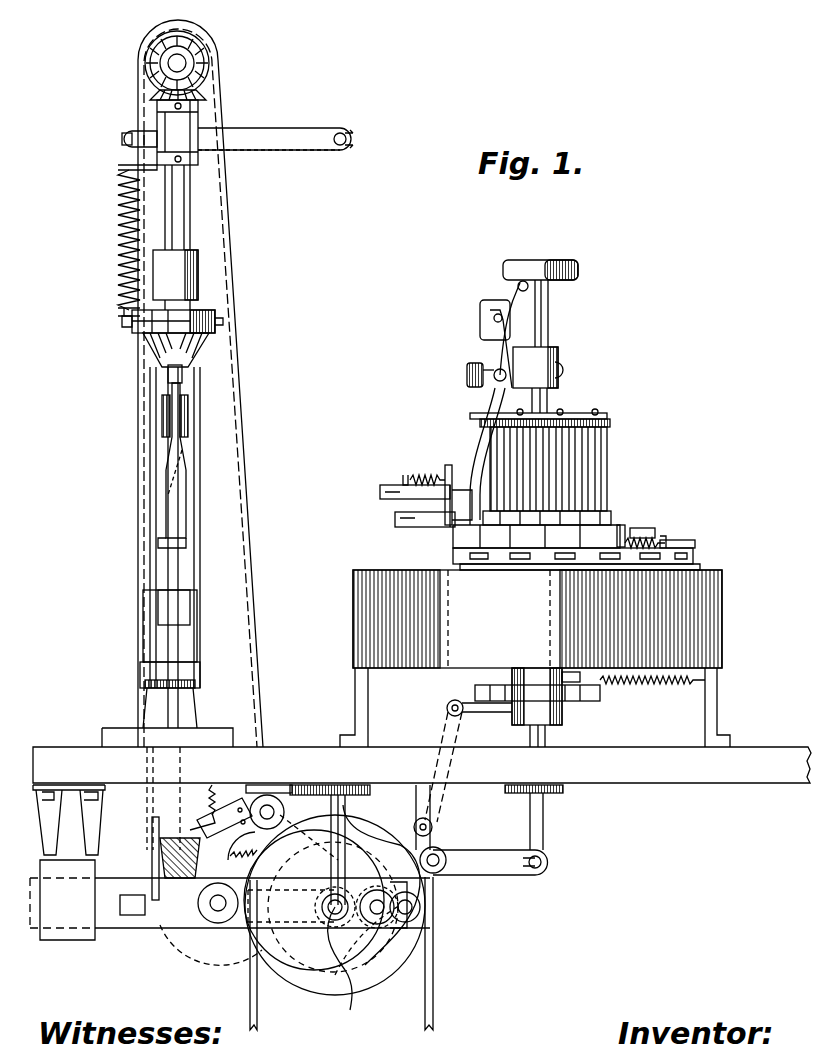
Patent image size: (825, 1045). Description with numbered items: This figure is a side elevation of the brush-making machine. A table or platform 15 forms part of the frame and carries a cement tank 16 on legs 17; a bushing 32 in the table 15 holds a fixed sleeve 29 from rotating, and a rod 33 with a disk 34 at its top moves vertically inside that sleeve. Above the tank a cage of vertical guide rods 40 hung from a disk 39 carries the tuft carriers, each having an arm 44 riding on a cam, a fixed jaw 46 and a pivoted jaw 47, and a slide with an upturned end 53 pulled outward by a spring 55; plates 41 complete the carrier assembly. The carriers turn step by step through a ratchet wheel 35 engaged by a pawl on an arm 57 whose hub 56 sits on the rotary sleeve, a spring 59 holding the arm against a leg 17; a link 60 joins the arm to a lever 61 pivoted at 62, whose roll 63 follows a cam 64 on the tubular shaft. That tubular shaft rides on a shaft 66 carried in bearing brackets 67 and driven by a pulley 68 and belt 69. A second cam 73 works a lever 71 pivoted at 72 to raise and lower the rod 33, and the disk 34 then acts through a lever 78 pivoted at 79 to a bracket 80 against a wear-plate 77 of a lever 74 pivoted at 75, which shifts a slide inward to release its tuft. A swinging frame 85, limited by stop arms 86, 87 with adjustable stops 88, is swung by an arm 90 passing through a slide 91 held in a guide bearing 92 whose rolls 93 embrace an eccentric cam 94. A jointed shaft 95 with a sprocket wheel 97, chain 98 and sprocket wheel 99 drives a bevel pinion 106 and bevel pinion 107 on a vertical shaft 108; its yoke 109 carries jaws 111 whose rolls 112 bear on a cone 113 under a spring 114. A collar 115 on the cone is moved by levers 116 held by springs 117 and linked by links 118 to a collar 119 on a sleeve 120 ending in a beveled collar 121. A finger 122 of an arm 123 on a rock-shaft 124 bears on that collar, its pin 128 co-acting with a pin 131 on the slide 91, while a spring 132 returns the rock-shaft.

The table or platform 15 is at (688, 777).
The cement tank 16 is at (722, 600).
The legs 17 is at (370, 690).
The fixed sleeve 29 is at (550, 390).
The bushing 32 is at (563, 791).
The rod 33 is at (550, 300).
The disk 34 is at (580, 264).
The ratchet wheel 35 is at (585, 700).
The disk 39 is at (610, 409).
The vertical guide rods 40 is at (590, 455).
The plates 41 is at (585, 511).
The arm 44 is at (468, 560).
The fixed jaw 46 is at (395, 514).
The jaw 47 is at (640, 526).
The upturned end 53 is at (446, 466).
The spring 55 is at (412, 474).
The hub 56 is at (530, 668).
The arm 57 is at (568, 675).
The spring 59 is at (655, 684).
The link 60 is at (505, 708).
The lever 61 is at (438, 722).
The pivot 62 is at (415, 820).
The roll 63 is at (398, 897).
The cam 64 is at (350, 804).
The shaft 66 is at (350, 1010).
The bearing brackets 67 is at (333, 866).
The pulley 68 is at (330, 990).
The belt 69 is at (434, 971).
The lever 71 is at (500, 856).
The pivot 72 is at (440, 855).
The cam 73 is at (370, 970).
The lever 74 is at (470, 433).
The pivot 75 is at (466, 368).
The wear-plate 77 is at (490, 330).
The lever 78 is at (512, 288).
The pivot 79 is at (478, 303).
The bracket 80 is at (525, 356).
The swinging frame 85 is at (158, 218).
The stop arm 86 is at (122, 140).
The stop arm 87 is at (297, 128).
The adjustable stops 88 is at (340, 145).
The arm 90 is at (130, 915).
The slide 91 is at (160, 930).
The guide bearing 92 is at (62, 940).
The rolls 93 is at (420, 915).
The cam 94 is at (300, 965).
The jointed shaft 95 is at (181, 63).
The sprocket wheel 97 is at (207, 88).
The chain 98 is at (244, 424).
The sprocket wheel 99 is at (205, 958).
The bevel pinion 106 is at (200, 38).
The bevel pinion 107 is at (200, 100).
The vertical shaft 108 is at (186, 196).
The yoke 109 is at (158, 426).
The jaws 111 is at (182, 494).
The rolls 112 is at (166, 374).
The cone 113 is at (150, 346).
The spring 114 is at (190, 391).
The collar 115 is at (122, 312).
The levers 116 is at (130, 322).
The springs 117 is at (118, 186).
The links 118 is at (143, 610).
The collar 119 is at (140, 670).
The sleeve 120 is at (160, 706).
The collar 121 is at (160, 840).
The finger 122 is at (195, 828).
The arm 123 is at (238, 800).
The rock-shaft 124 is at (272, 810).
The pin 128 is at (205, 820).
The pin 131 is at (150, 818).
The spring 132 is at (212, 785).